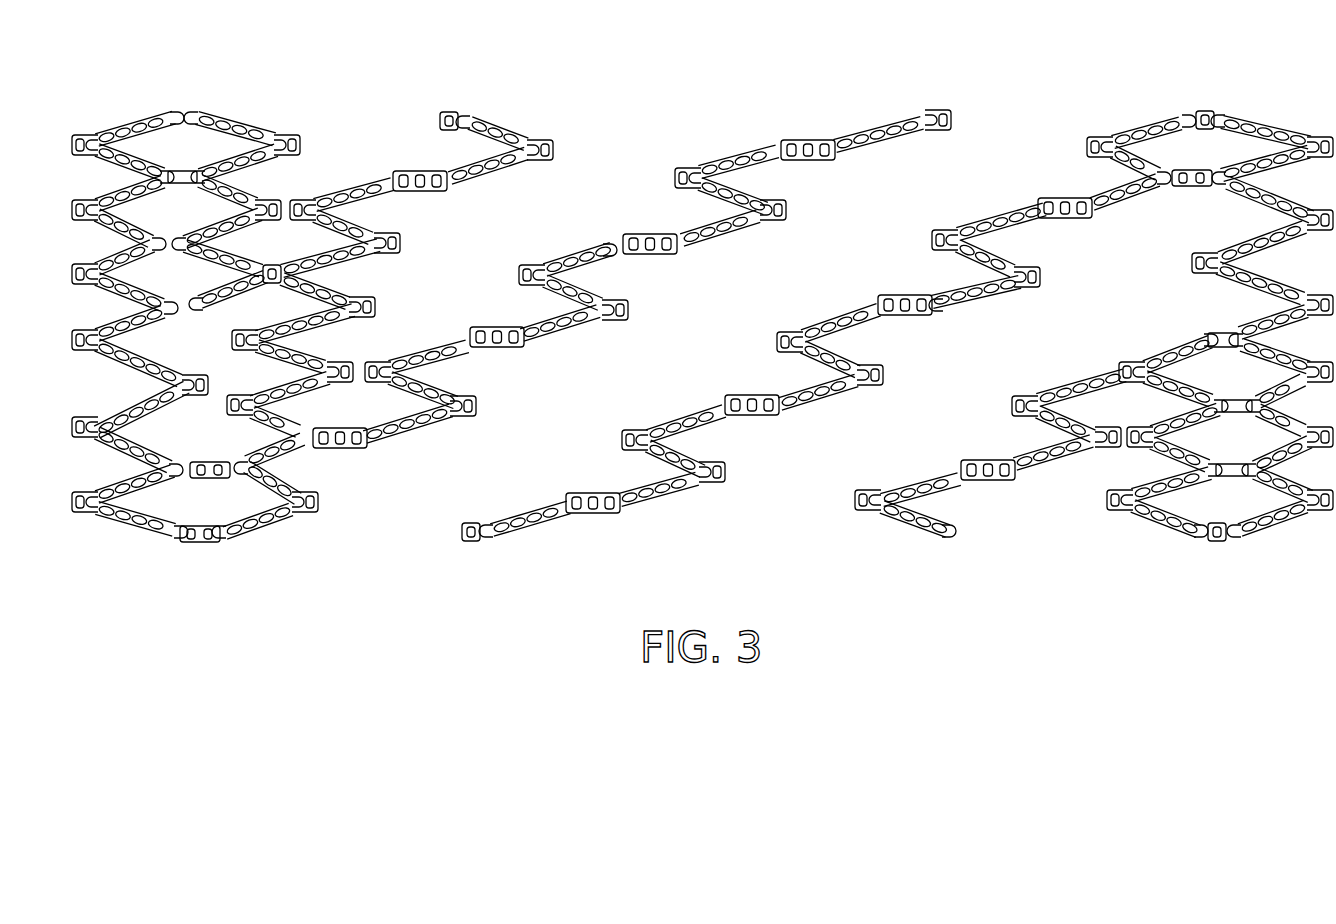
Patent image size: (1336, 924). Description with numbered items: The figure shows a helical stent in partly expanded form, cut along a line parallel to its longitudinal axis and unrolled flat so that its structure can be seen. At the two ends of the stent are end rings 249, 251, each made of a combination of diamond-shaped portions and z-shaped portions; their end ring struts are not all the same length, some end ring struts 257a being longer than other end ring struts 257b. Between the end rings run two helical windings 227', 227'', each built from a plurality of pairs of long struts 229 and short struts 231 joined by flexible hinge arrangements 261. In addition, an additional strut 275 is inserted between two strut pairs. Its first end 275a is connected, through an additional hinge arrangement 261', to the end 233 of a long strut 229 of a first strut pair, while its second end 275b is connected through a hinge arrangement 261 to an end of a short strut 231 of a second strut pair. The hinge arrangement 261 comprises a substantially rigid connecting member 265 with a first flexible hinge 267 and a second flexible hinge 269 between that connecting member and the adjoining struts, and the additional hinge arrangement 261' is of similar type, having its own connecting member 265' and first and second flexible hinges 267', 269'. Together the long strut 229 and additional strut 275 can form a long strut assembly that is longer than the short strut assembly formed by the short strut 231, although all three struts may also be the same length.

The end ring 249 is at (226, 334).
The end ring 251 is at (1283, 537).
The end ring strut 257a is at (126, 190).
The end ring strut 257b is at (140, 217).
The helical winding 227' is at (585, 294).
The helical winding 227'' is at (740, 401).
The long strut 229 is at (736, 158).
The short strut 231 is at (762, 192).
The end of long strut 233 is at (635, 196).
The flexible hinge arrangement 261 is at (798, 224).
The additional hinge arrangement 261' is at (792, 318).
The connecting member 265 is at (1037, 227).
The connecting member 265' is at (943, 320).
The first flexible hinge 267 is at (1039, 232).
The first flexible hinge 267' is at (945, 271).
The second flexible hinge 269 is at (1016, 299).
The second flexible hinge 269' is at (906, 315).
The additional strut 275 is at (747, 257).
The first end of additional strut 275a is at (705, 250).
The second end of additional strut 275b is at (654, 227).